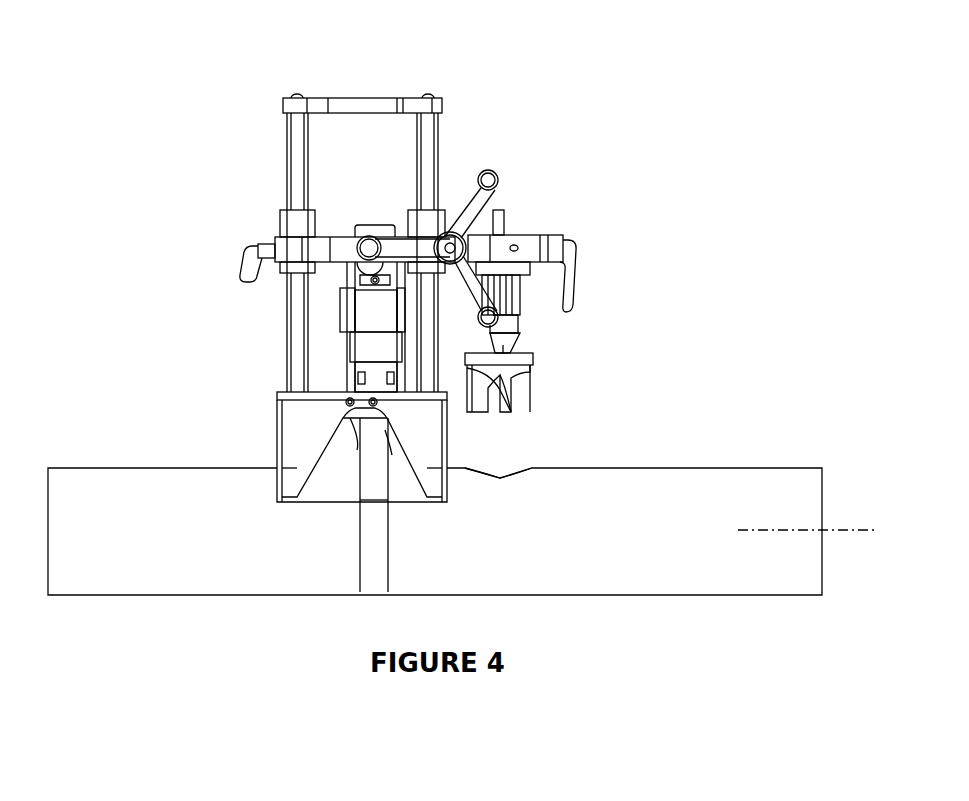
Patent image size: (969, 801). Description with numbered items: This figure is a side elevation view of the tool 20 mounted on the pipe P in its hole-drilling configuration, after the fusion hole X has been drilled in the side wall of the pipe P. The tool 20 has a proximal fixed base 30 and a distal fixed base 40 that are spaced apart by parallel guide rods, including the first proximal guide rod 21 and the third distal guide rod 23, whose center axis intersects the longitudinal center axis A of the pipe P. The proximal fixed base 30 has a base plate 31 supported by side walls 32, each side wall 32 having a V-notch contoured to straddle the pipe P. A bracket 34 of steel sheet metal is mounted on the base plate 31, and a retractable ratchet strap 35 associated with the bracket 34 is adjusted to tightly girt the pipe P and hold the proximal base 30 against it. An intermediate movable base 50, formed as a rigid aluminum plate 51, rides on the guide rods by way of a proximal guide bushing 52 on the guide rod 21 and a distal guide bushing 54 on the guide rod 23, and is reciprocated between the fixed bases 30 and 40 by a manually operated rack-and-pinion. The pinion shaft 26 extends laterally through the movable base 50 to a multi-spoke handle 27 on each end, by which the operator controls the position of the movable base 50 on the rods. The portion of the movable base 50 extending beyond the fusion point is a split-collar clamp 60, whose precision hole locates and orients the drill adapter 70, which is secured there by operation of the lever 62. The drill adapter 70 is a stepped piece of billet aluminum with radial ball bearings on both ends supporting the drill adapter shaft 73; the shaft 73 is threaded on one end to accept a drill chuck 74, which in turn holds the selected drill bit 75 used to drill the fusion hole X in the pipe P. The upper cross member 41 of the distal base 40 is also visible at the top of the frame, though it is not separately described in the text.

The tool 20 is at (226, 56).
The guide rod 21 is at (428, 360).
The guide rod 23 is at (292, 316).
The pinion shaft 26 is at (451, 262).
The multi-spoke handle 27 is at (495, 168).
The proximal fixed base 30 is at (231, 424).
The base plate 31 is at (283, 392).
The side wall 32 is at (277, 418).
The bracket 34 is at (348, 378).
The retractable ratchet strap 35 is at (375, 555).
The distal fixed base 40 is at (413, 56).
The top cross bar 41 is at (343, 100).
The intermediate movable base 50 is at (181, 231).
The plate 51 is at (351, 237).
The proximal guide bushing 52 is at (412, 216).
The distal guide bushing 54 is at (280, 221).
The split-collar clamp 60 is at (640, 147).
The lever 62 is at (578, 273).
The drill adapter 70 is at (630, 339).
The drill adapter shaft 73 is at (500, 219).
The drill chuck 74 is at (527, 334).
The drill bit 75 is at (533, 379).
The pipe P is at (672, 493).
The fusion hole X is at (505, 476).
The longitudinal center axis A is at (843, 530).